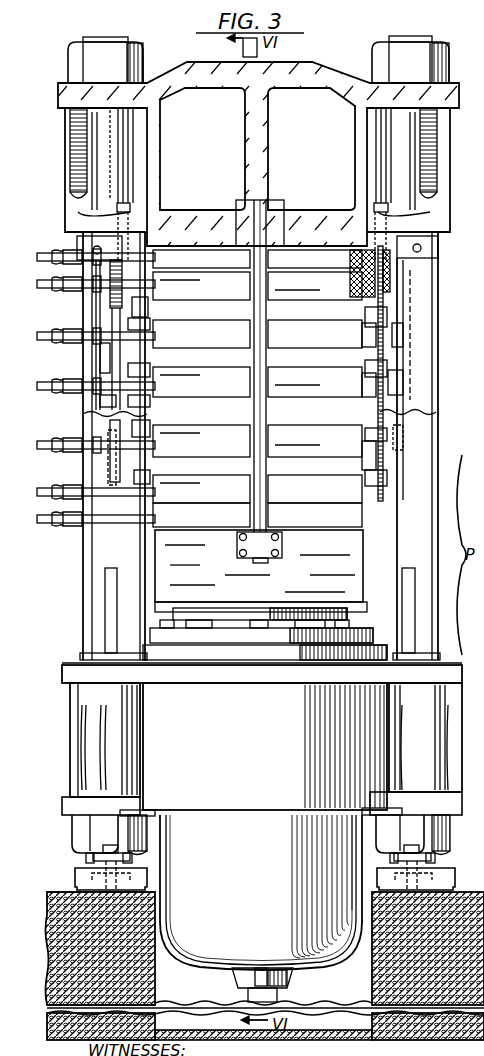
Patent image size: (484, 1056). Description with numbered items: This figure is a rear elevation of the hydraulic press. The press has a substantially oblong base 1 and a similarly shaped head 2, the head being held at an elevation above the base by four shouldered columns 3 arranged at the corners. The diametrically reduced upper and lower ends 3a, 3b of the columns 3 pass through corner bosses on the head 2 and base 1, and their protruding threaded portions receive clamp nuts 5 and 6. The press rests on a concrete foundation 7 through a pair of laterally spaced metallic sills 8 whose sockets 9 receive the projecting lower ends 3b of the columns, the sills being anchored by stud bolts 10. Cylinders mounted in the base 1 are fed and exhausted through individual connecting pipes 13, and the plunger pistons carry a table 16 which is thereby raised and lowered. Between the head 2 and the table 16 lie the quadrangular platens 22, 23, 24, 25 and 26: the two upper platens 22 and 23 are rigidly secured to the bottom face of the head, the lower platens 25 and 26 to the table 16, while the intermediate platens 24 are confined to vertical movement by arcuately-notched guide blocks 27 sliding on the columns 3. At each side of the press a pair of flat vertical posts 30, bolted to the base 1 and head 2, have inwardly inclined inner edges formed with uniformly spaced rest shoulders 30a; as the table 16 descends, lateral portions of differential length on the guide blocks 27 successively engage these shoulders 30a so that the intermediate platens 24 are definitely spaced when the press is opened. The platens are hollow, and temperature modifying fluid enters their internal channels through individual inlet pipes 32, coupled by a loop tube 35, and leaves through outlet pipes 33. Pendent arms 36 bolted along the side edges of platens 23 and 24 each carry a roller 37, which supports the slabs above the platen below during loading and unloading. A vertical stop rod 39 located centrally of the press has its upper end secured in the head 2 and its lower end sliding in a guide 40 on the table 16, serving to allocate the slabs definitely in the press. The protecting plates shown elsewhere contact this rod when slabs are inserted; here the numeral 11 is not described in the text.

The base 1 is at (262, 749).
The head 2 is at (308, 70).
The shouldered columns 3 is at (84, 576).
The upper ends of columns 3a is at (106, 37).
The lower ends of columns 3b is at (132, 858).
The clamp nuts 5 is at (68, 48).
The clamp nuts 6 is at (78, 830).
The concrete foundation 7 is at (143, 911).
The metallic sills 8 is at (78, 874).
The sockets 9 is at (147, 875).
The stud bolts 10 is at (115, 838).
The vessel 11 is at (261, 892).
The connecting pipes 13 is at (278, 993).
The table 16 is at (259, 566).
The platen 22 is at (257, 259).
The platen 23 is at (257, 286).
The intermediate platens 24 is at (257, 388).
The platen 25 is at (238, 490).
The platen 26 is at (238, 517).
The guide blocks 27 is at (112, 320).
The flat vertical posts 30 is at (113, 520).
The rest shoulders 30a is at (106, 343).
The inlet pipes 32 is at (42, 253).
The outlet pipes 33 is at (95, 262).
The loop tube 35 is at (70, 543).
The pendent arms 36 is at (148, 308).
The rollers 37 is at (150, 328).
The stop rod 39 is at (267, 358).
The guide 40 is at (284, 546).